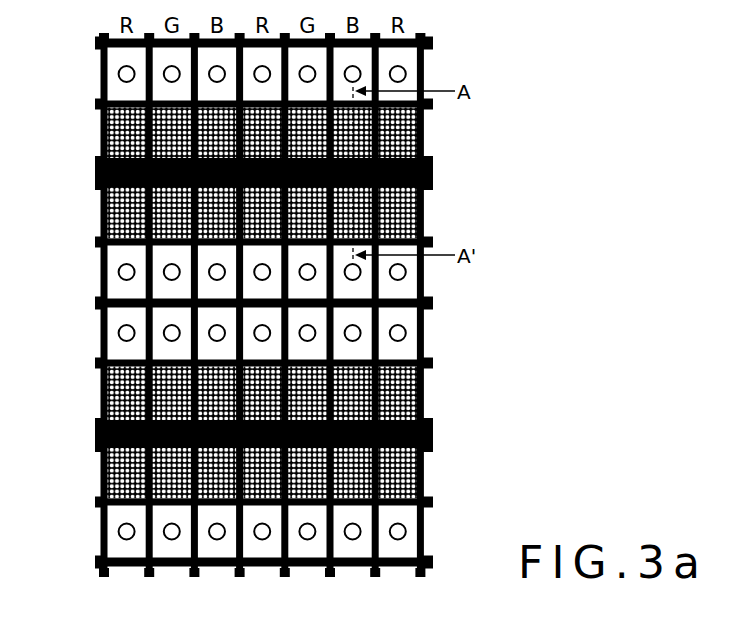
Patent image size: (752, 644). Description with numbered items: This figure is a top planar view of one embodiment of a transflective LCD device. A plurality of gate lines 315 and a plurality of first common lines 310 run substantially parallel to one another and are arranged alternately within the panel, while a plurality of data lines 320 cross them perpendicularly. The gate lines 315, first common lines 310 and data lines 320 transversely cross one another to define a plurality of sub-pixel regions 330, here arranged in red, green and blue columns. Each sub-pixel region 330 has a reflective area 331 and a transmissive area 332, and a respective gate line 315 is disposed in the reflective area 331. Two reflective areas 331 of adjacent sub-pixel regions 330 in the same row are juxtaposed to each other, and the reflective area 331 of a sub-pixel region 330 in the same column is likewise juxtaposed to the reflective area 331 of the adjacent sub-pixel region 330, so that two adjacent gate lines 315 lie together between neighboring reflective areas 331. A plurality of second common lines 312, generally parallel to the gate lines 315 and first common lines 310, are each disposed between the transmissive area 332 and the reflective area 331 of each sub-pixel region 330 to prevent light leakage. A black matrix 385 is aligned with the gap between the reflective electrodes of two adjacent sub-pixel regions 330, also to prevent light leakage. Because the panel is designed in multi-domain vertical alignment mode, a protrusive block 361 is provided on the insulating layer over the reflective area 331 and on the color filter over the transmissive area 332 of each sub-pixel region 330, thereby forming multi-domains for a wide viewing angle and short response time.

The first common line 310 is at (95, 43).
The second common line 312 is at (95, 104).
The gate line 315 is at (95, 161).
The data line 320 is at (151, 577).
The sub-pixel region 330 is at (323, 176).
The reflective area 331 is at (423, 127).
The transmissive area 332 is at (408, 70).
The protrusive block 361 is at (423, 471).
The black matrix 385 is at (433, 434).